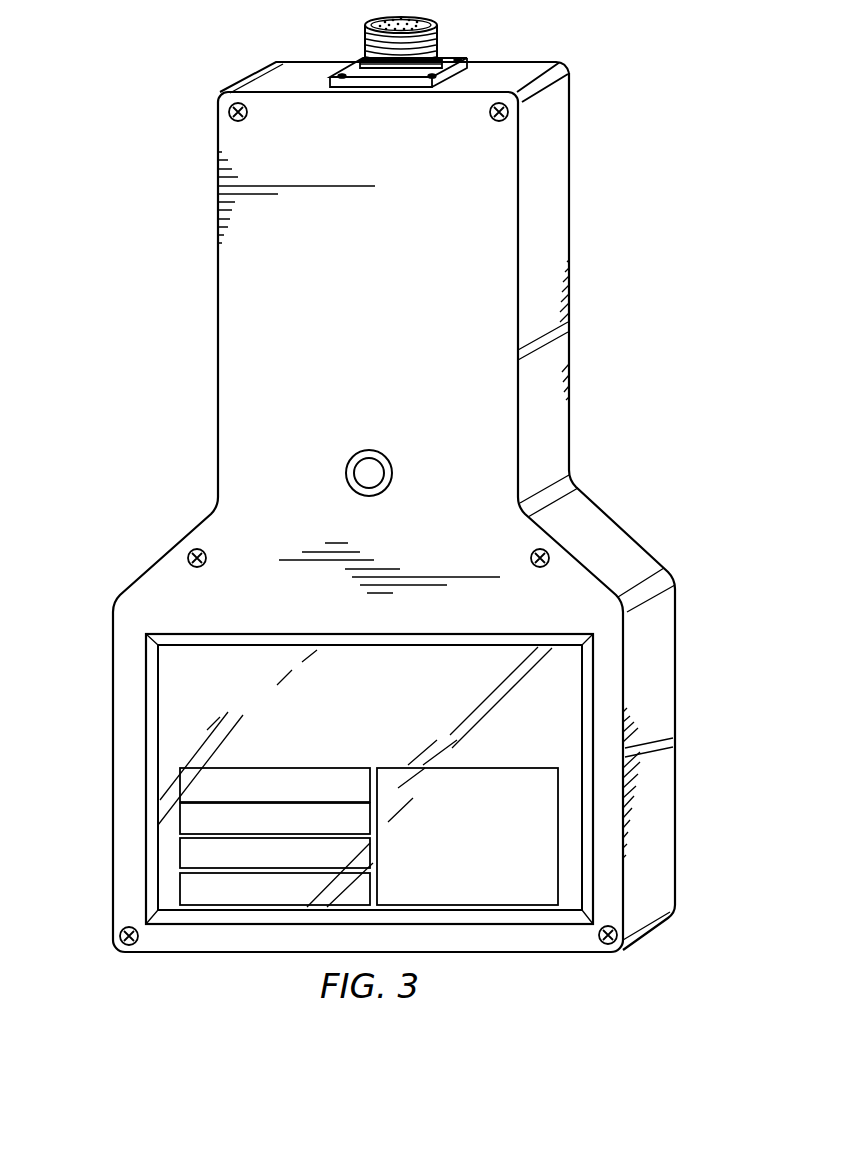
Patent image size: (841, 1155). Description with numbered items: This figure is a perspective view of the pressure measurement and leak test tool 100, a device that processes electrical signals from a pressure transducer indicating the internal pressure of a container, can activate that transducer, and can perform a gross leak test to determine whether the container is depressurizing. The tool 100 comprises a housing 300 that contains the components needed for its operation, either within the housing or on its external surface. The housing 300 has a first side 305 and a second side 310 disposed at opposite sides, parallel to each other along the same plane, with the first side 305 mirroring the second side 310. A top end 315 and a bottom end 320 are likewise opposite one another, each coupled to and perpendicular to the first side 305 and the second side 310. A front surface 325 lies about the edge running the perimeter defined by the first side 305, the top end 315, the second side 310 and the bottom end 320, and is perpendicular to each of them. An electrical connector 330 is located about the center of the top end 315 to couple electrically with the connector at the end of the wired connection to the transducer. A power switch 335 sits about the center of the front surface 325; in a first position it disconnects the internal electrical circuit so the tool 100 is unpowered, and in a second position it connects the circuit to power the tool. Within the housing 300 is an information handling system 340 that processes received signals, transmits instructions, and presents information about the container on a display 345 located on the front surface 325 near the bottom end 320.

The pressure measurement and leak test tool 100 is at (195, 28).
The housing 300 is at (598, 259).
The first side 305 is at (545, 400).
The second side 310 is at (218, 315).
The top end 315 is at (325, 80).
The bottom end 320 is at (248, 954).
The front surface 325 is at (432, 162).
The electrical connector 330 is at (440, 45).
The power switch 335 is at (363, 452).
The information handling system 340 is at (418, 694).
The display 345 is at (205, 848).